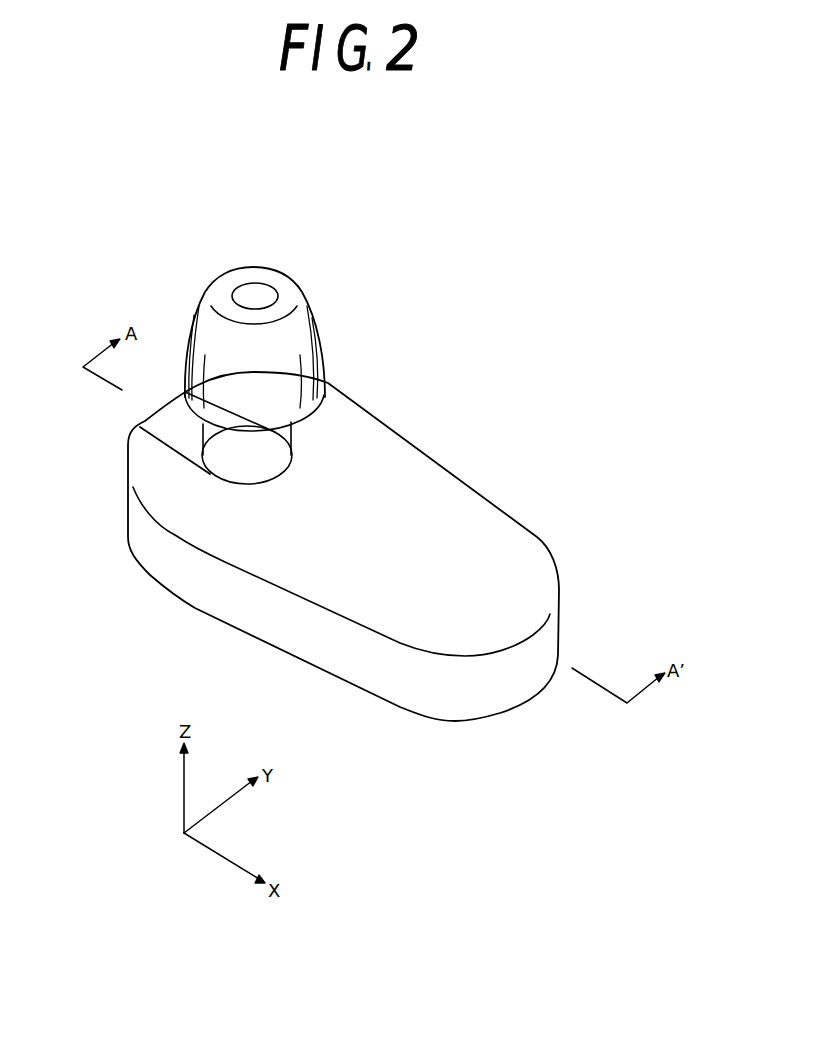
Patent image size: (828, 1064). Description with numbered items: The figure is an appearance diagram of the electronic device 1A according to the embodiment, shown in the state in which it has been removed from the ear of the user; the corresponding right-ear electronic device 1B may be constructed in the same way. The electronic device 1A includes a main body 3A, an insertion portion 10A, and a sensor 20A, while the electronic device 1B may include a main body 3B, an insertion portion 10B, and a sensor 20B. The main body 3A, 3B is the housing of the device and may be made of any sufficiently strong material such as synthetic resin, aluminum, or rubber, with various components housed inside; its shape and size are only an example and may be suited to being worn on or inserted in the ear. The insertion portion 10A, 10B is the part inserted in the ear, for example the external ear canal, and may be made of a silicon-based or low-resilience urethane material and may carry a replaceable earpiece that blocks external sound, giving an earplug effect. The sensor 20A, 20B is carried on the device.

The electronic device 1A is at (319, 494).
The electronic device 1B is at (435, 383).
The main body 3A is at (354, 546).
The main body 3B is at (452, 471).
The insertion portion 10A is at (316, 349).
The insertion portion 10B is at (308, 313).
The sensor 20A is at (175, 441).
The sensor 20B is at (173, 418).